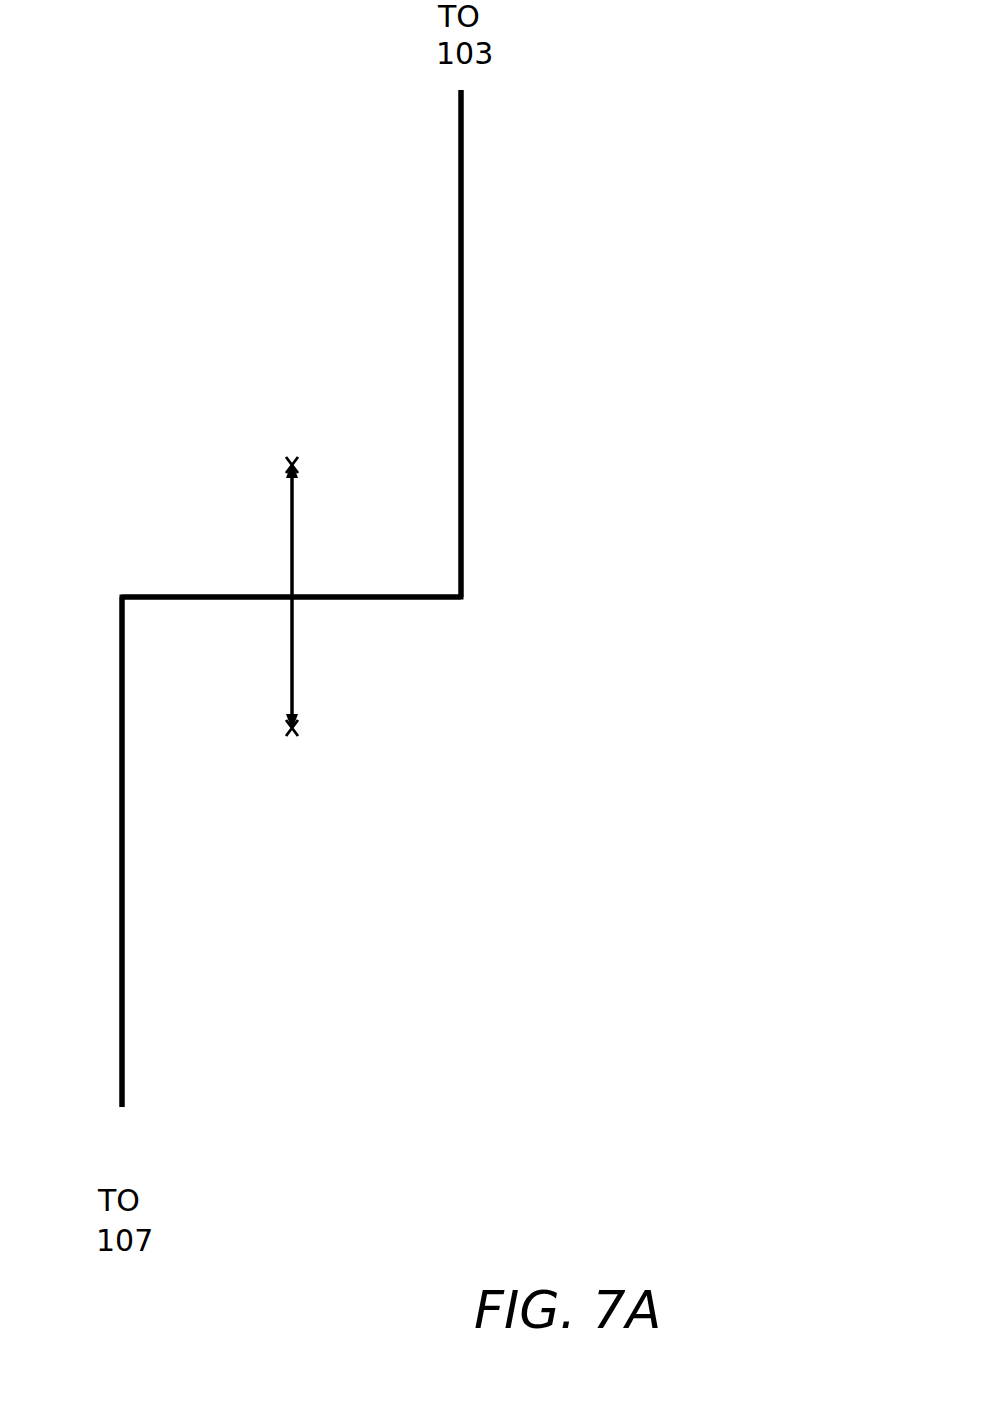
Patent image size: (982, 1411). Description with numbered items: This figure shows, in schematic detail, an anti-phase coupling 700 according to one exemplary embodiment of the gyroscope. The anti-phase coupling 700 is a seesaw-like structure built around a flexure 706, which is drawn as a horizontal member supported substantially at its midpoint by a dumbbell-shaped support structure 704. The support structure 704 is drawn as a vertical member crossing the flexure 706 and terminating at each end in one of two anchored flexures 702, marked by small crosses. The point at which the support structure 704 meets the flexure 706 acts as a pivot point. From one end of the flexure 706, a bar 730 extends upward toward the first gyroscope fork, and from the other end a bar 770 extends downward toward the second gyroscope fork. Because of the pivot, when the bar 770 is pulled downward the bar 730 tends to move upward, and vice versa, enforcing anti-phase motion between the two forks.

The anti-phase coupling 700 is at (673, 329).
The bar 730 is at (463, 170).
The flexure 706 is at (186, 595).
The bar 770 is at (127, 1062).
The dumbbell-shaped support structure 704 is at (296, 654).
The anchored flexure 702 is at (277, 461).